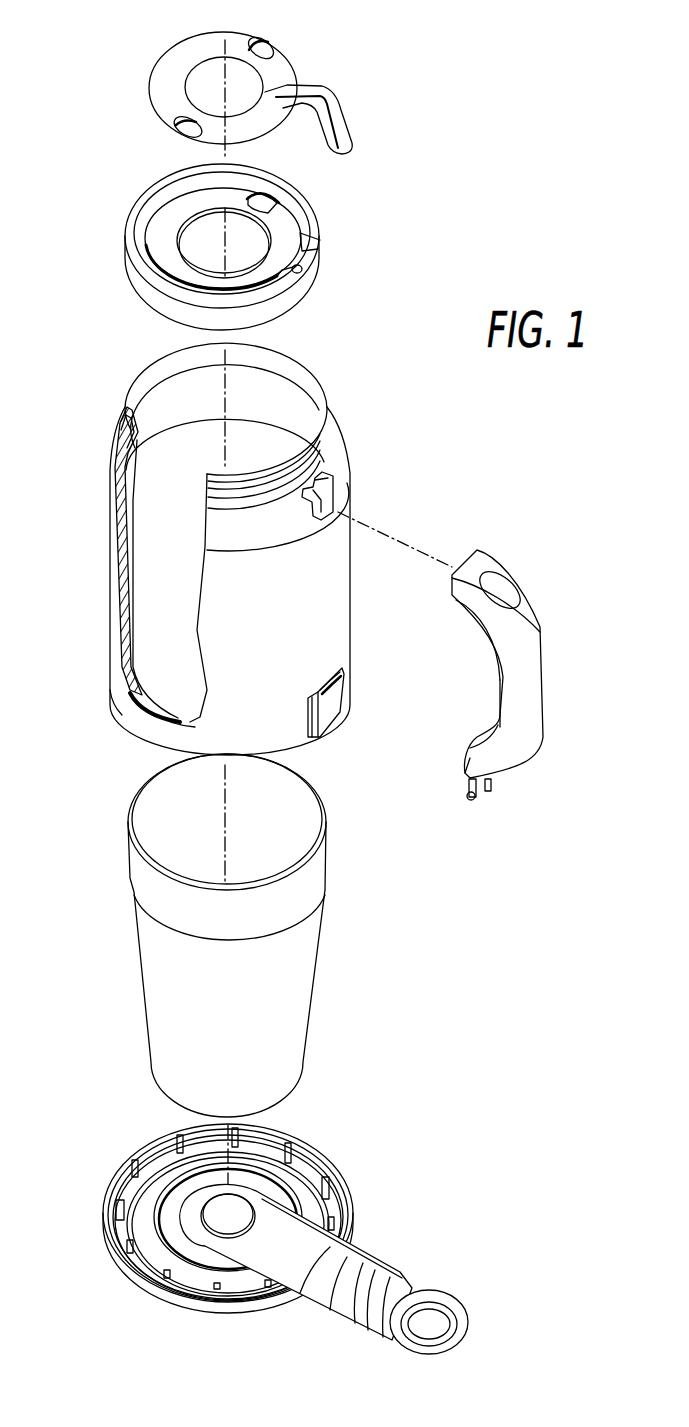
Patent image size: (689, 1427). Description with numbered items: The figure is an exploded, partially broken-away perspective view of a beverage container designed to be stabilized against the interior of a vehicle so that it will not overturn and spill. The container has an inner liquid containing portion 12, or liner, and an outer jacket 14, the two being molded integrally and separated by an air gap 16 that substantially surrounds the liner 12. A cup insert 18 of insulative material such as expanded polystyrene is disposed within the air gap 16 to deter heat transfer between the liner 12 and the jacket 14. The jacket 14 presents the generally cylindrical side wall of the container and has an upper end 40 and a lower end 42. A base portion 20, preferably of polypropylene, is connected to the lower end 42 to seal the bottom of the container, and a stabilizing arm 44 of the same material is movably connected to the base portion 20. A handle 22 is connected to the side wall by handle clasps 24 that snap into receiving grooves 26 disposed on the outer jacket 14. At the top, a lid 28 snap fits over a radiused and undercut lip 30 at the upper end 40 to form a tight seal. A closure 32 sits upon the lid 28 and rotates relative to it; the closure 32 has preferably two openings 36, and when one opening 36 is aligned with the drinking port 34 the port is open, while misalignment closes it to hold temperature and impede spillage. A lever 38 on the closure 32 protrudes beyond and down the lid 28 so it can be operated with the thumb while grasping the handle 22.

The inner liquid containing portion 12 is at (147, 562).
The outer jacket 14 is at (338, 597).
The air gap 16 is at (147, 707).
The cup insert 18 is at (302, 972).
The base portion 20 is at (140, 1223).
The handle 22 is at (530, 678).
The handle clasps 24 is at (478, 797).
The receiving grooves 26 is at (320, 485).
The lid 28 is at (322, 280).
The radiused and undercut lip 30 is at (323, 437).
The closure 32 is at (161, 70).
The drinking port 34 is at (268, 200).
The closure openings 36 is at (263, 50).
The lever 38 is at (349, 127).
The upper end 40 is at (116, 430).
The lower end 42 is at (120, 700).
The stabilizing arm 44 is at (380, 1266).